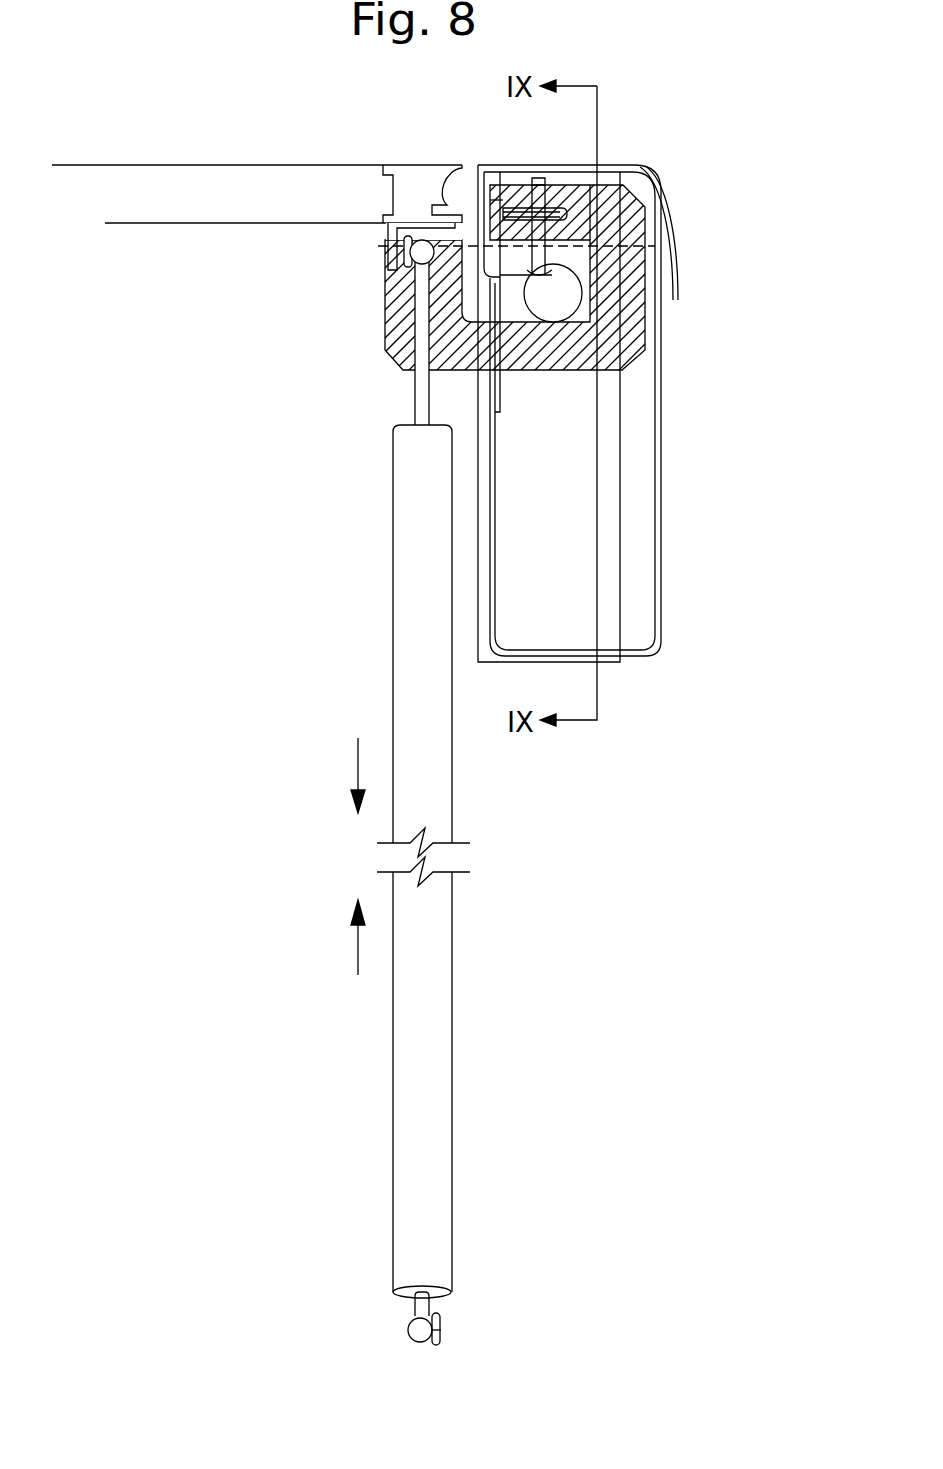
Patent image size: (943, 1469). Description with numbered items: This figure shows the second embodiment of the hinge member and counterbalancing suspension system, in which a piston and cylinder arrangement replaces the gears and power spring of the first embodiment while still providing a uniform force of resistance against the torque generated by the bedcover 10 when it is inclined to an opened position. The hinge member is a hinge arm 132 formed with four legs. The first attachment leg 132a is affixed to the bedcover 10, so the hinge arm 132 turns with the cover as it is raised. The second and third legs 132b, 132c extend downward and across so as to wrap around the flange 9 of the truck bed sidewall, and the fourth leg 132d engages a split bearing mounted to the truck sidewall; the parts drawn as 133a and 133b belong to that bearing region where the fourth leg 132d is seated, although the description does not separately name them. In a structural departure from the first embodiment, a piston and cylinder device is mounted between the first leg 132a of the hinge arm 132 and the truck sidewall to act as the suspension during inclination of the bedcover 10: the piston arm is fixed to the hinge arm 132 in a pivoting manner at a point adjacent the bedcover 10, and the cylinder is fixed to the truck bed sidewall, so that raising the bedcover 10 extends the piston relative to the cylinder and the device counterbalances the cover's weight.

The flange 9 is at (651, 171).
The bedcover 10 is at (197, 205).
The hinge arm 132 is at (650, 343).
The first attachment leg 132a is at (397, 313).
The second leg 132b is at (553, 372).
The third leg 132c is at (633, 313).
The fourth leg 132d is at (514, 186).
The plate 133a is at (566, 178).
The ball joint 133b is at (574, 257).